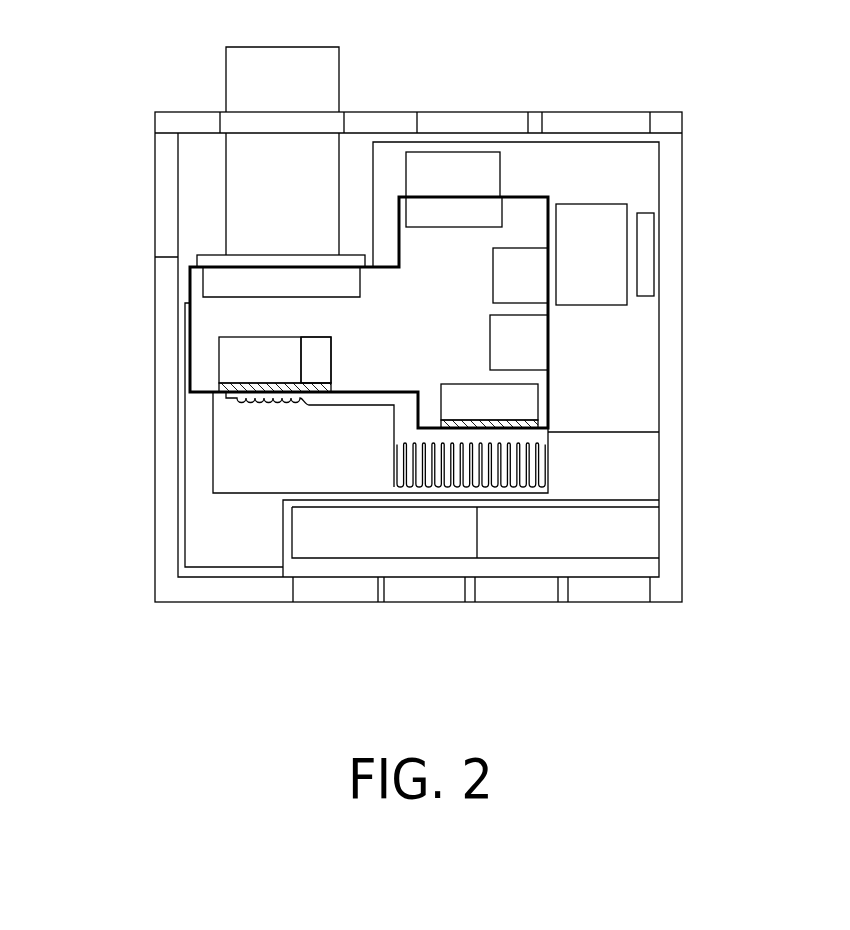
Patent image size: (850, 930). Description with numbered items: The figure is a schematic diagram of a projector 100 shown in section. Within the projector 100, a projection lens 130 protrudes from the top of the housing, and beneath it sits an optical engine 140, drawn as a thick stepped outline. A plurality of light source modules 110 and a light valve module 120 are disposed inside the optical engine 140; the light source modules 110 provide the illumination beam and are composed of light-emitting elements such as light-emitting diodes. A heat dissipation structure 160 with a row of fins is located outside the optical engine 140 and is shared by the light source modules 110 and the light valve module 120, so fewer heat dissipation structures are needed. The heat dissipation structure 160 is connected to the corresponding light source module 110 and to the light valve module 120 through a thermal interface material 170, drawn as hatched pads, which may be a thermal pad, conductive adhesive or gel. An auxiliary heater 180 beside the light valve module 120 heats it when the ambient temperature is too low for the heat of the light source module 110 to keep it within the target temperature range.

The projector 100 is at (825, 657).
The light source module 110 is at (495, 212).
The light valve module 120 is at (222, 357).
The projection lens 130 is at (229, 78).
The optical engine 140 is at (190, 292).
The heat dissipation structure 160 is at (220, 455).
The thermal interface material 170 is at (222, 390).
The auxiliary heater 180 is at (325, 360).